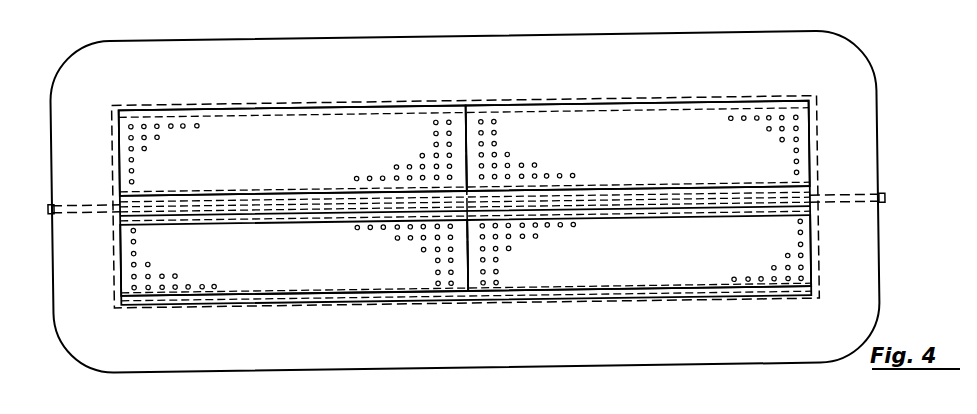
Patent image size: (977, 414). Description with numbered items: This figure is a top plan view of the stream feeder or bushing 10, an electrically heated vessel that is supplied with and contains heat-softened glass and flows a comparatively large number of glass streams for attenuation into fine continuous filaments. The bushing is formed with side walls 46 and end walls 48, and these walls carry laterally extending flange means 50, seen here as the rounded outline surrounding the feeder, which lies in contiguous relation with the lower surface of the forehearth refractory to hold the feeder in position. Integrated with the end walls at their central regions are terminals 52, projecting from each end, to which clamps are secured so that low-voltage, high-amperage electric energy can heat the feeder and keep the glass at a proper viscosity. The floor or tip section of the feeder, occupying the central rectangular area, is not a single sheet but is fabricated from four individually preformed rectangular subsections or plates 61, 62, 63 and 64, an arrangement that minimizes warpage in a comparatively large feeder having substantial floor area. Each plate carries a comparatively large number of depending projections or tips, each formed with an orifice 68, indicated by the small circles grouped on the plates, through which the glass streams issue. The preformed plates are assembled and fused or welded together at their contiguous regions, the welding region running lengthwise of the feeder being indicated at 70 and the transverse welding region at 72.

The stream feeder or bushing 10 is at (472, 187).
The flange means 50 is at (667, 36).
The end walls 48 is at (118, 170).
The terminals 52 is at (50, 201).
The side walls 46 is at (537, 104).
The lengthwise welding region 70 is at (618, 200).
The transverse welding region 72 is at (465, 132).
The subsection or plate 64 is at (262, 167).
The subsection or plate 63 is at (659, 161).
The subsection or plate 61 is at (267, 263).
The subsection or plate 62 is at (654, 272).
The orifice 68 is at (410, 166).